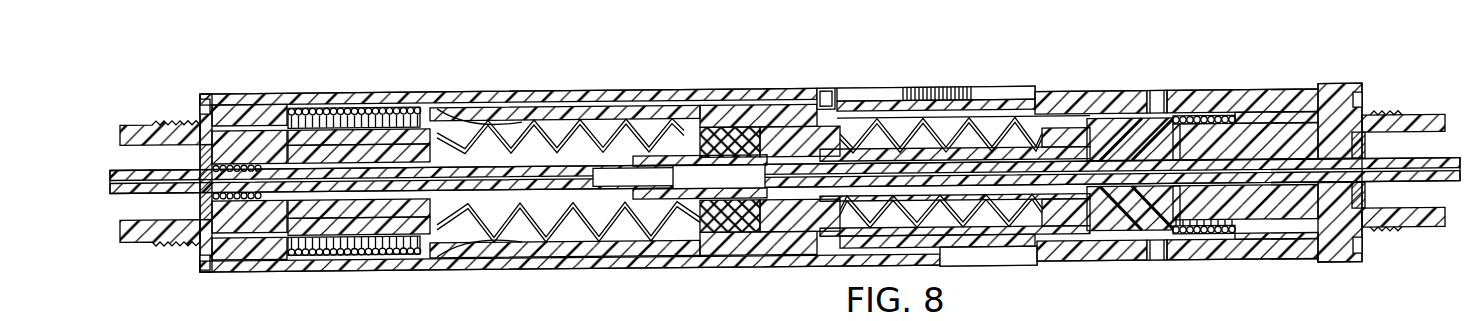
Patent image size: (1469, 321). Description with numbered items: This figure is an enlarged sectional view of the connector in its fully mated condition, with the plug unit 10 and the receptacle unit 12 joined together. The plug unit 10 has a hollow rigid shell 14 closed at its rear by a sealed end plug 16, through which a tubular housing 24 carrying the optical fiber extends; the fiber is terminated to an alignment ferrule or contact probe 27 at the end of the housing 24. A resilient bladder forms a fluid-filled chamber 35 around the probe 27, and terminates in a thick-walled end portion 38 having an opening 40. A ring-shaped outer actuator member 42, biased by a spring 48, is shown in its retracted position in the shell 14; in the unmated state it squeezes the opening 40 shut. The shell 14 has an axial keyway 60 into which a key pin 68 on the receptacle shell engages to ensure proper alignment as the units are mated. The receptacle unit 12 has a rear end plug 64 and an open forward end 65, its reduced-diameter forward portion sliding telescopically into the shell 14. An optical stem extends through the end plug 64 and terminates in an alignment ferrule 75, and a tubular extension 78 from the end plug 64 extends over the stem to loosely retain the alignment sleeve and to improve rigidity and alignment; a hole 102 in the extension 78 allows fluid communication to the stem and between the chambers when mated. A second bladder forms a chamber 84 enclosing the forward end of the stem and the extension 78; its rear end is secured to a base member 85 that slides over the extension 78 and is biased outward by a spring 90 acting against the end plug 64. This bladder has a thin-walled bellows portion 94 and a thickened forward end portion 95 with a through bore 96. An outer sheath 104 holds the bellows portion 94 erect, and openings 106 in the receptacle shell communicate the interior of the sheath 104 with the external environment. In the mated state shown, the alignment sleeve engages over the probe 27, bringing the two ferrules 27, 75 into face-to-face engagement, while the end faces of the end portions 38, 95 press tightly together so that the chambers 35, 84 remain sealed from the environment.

The plug unit 10 is at (350, 70).
The receptacle unit 12 is at (1144, 280).
The outer body or shell 14 is at (577, 257).
The end plug 16 is at (233, 102).
The tubular housing 24 is at (450, 188).
The alignment ferrule or contact probe 27 is at (622, 180).
The fluid-filled chamber 35 is at (542, 150).
The end portion 38 is at (744, 133).
The opening or aperture 40 is at (738, 137).
The outer actuator member 42 is at (445, 107).
The spring 48 is at (340, 253).
The axial keyway or slot 60 is at (893, 95).
The rear end plug or closure 64 is at (1333, 93).
The open forward end 65 is at (485, 110).
The key pin 68 is at (828, 100).
The alignment ferrule 75 is at (722, 180).
The tubular extension 78 is at (1024, 152).
The chamber 84 is at (966, 147).
The base member 85 is at (1163, 137).
The spring 90 is at (1218, 110).
The flexible bellows portion 94 is at (982, 213).
The forward end portion 95 is at (797, 137).
The through bore or aperture 96 is at (780, 197).
The hole 102 is at (867, 195).
The outer sheath or tubular cover 104 is at (1048, 230).
The openings 106 is at (1160, 97).